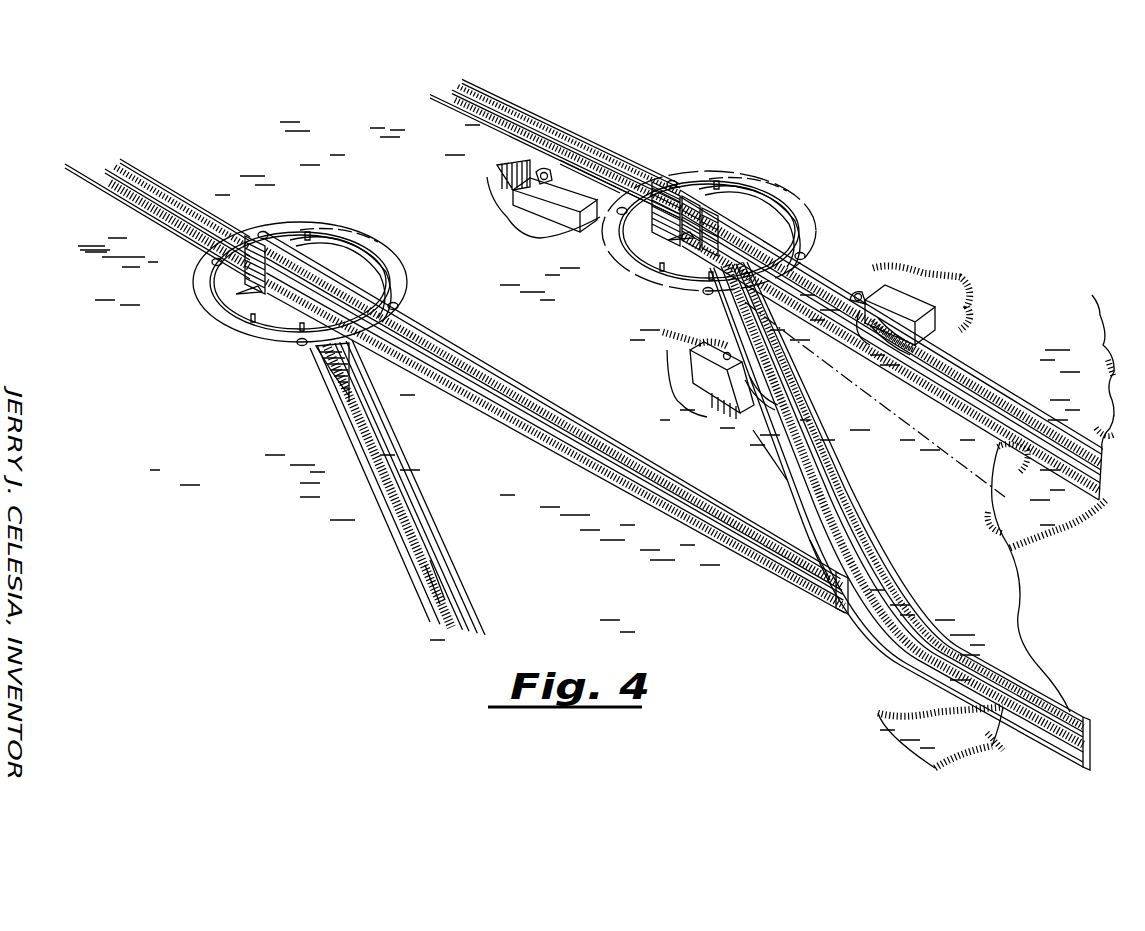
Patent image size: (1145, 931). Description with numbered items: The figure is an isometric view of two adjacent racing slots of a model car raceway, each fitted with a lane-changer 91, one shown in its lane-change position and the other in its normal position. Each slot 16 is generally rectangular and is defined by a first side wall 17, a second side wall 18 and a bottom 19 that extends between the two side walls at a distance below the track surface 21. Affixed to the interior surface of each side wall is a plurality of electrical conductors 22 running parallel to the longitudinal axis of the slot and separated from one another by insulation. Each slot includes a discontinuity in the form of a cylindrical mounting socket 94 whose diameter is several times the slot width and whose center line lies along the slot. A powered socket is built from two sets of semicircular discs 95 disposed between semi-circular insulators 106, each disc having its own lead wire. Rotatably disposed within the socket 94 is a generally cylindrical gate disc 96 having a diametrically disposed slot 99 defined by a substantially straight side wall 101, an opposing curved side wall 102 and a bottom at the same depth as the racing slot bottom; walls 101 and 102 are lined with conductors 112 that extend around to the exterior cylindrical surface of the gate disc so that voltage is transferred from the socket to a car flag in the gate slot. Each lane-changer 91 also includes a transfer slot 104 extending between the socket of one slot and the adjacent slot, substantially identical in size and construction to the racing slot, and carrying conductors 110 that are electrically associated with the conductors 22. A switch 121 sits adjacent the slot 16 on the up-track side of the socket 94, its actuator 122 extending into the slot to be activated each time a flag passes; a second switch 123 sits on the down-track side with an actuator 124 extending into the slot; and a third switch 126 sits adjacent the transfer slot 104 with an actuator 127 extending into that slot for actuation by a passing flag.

The slot 16 is at (90, 157).
The first side wall 17 is at (128, 178).
The second side wall 18 is at (66, 166).
The bottom 19 is at (1053, 772).
The track surface 21 is at (352, 133).
The electrical conductors 22 is at (162, 187).
The lane-changer 91 is at (222, 348).
The mounting socket 94 is at (292, 340).
The semicircular discs 95 is at (672, 190).
The gate disc 96 is at (368, 280).
The slot 99 is at (262, 272).
The straight side wall 101 is at (332, 270).
The curved side wall 102 is at (250, 292).
The transfer slot 104 is at (392, 494).
The semi-circular insulators 106 is at (702, 232).
The conductors 110 is at (455, 580).
The conductors 112 is at (328, 238).
The switch 121 is at (500, 190).
The actuator 122 is at (602, 178).
The second switch 123 is at (908, 290).
The actuator 124 is at (908, 342).
The third switch 126 is at (682, 374).
The actuator 127 is at (770, 402).